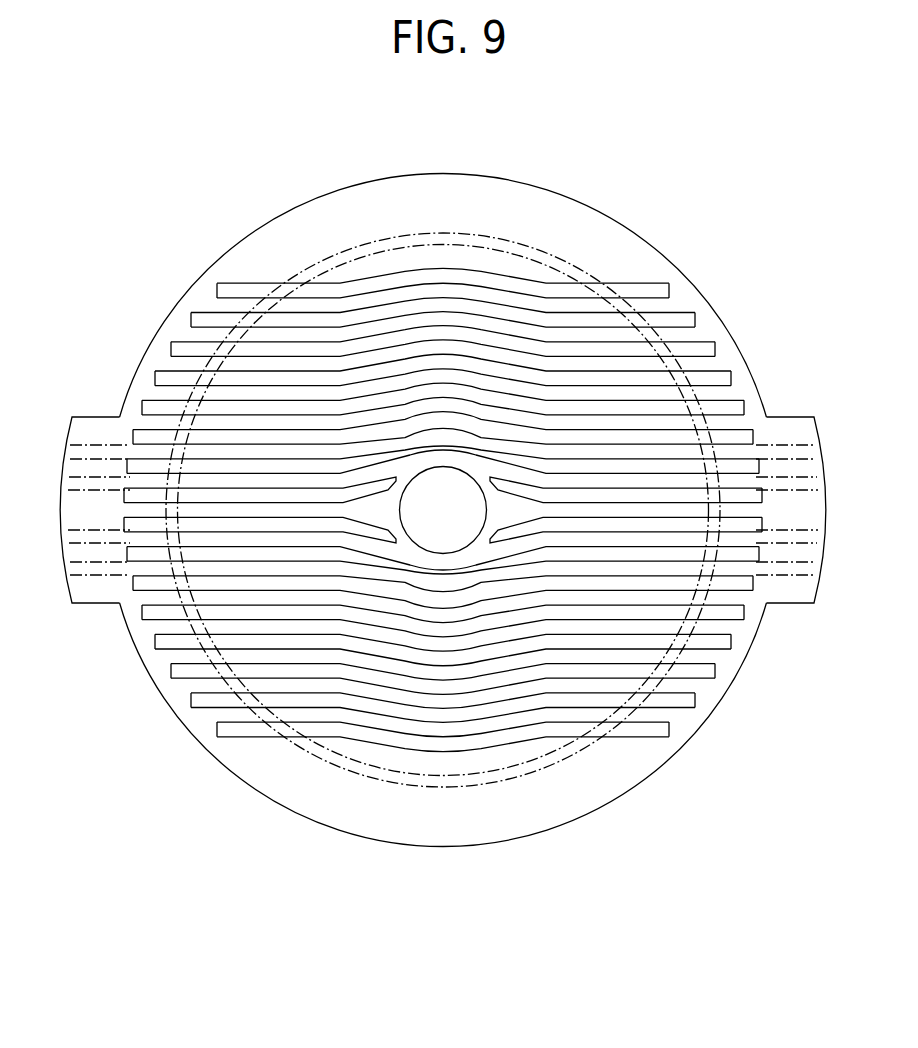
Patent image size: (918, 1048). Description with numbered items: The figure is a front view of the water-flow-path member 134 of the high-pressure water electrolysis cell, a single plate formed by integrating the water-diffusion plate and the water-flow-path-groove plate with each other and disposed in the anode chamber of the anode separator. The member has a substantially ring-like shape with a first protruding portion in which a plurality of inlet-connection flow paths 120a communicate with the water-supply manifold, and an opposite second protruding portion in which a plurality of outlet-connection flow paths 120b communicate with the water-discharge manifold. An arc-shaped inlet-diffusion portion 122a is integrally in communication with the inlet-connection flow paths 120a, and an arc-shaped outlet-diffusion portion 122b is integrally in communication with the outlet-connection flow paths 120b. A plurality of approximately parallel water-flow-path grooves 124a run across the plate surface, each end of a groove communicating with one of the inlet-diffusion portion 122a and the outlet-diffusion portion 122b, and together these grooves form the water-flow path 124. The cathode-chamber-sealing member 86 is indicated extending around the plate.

The water-flow-path member 134 is at (487, 102).
The cathode-chamber-sealing member 86 is at (383, 239).
The inlet-connection flow paths 120a is at (106, 570).
The outlet-connection flow paths 120b is at (782, 568).
The inlet-diffusion portion 122a is at (163, 657).
The outlet-diffusion portion 122b is at (733, 657).
The water-flow path 124 is at (581, 676).
The water-flow-path grooves 124a is at (512, 710).